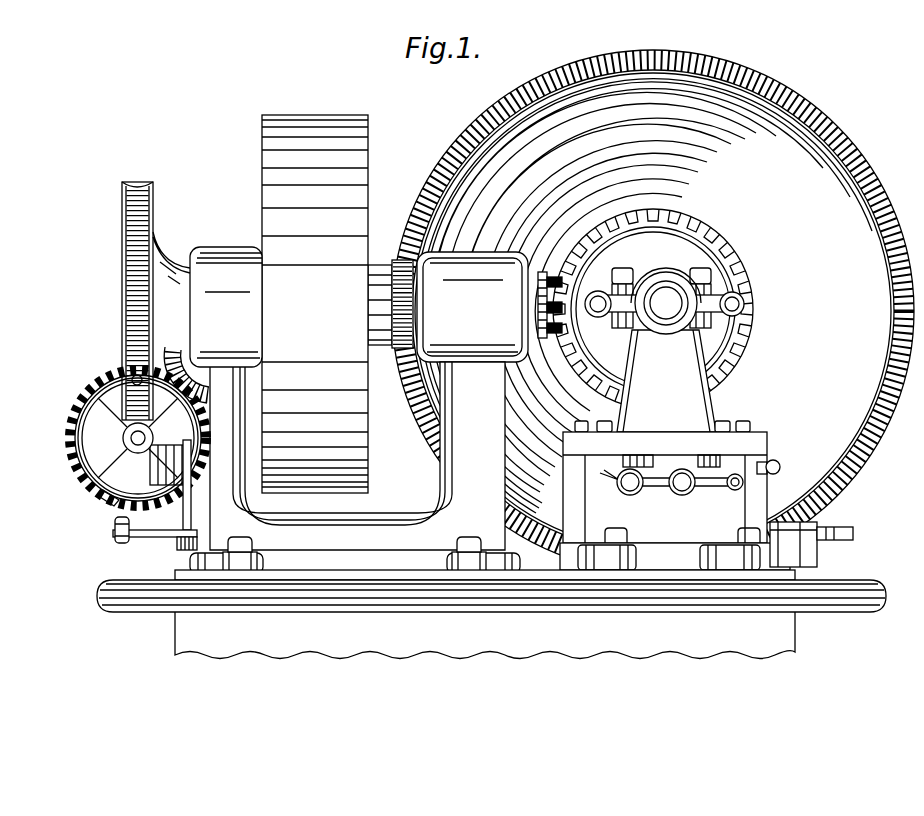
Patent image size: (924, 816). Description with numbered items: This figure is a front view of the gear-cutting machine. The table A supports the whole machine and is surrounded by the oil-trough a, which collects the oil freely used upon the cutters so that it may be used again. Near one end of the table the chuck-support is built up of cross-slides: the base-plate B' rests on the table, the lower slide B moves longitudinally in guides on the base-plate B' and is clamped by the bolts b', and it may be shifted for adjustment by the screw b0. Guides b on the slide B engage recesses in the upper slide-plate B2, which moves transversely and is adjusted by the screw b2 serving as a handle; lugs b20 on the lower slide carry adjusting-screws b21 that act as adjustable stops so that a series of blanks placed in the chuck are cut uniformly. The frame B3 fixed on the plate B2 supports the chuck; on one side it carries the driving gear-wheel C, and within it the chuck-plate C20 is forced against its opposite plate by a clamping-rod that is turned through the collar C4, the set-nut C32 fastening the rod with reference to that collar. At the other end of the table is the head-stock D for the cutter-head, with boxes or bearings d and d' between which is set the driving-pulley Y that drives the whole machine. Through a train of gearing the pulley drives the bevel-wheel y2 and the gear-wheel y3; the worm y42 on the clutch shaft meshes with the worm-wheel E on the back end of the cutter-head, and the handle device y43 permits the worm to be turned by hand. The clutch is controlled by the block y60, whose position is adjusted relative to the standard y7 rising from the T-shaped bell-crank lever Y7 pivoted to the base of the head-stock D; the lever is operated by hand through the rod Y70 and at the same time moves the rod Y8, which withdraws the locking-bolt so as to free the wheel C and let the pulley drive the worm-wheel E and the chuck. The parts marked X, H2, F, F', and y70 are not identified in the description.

The driving gear-wheel C is at (653, 311).
The internal ring gear X is at (740, 249).
The chuck-plate C20 is at (653, 309).
The collar C4 is at (652, 272).
The set-nut C32 is at (666, 303).
The brush holder H2 is at (563, 290).
The brushes F is at (545, 340).
The frame B3 is at (577, 410).
The lower slide B is at (665, 482).
The upper slide-plate B2 is at (603, 466).
The guides b is at (614, 487).
The screw b2 is at (684, 493).
The bolts b' is at (681, 525).
The base-plate B' is at (675, 557).
The lugs b20 is at (766, 462).
The adjusting-screws b21 is at (780, 467).
The screw b0 is at (853, 535).
The coupling F' is at (390, 289).
The bearing d' is at (472, 307).
The head-stock D is at (357, 431).
The driving-pulley Y is at (315, 304).
The bearing d is at (226, 307).
The worm-wheel E is at (153, 192).
The bevel-wheel y2 is at (172, 378).
The gear-wheel y3 is at (122, 383).
The handle device y43 is at (82, 438).
The worm y42 is at (124, 437).
The block y60 is at (108, 503).
The standard y7 is at (193, 513).
The T-shaped bell-crank lever Y7 is at (143, 537).
The rod Y70 is at (114, 540).
The block y70 is at (186, 543).
The rod Y8 is at (366, 555).
The oil-trough a is at (493, 591).
The table A is at (485, 635).